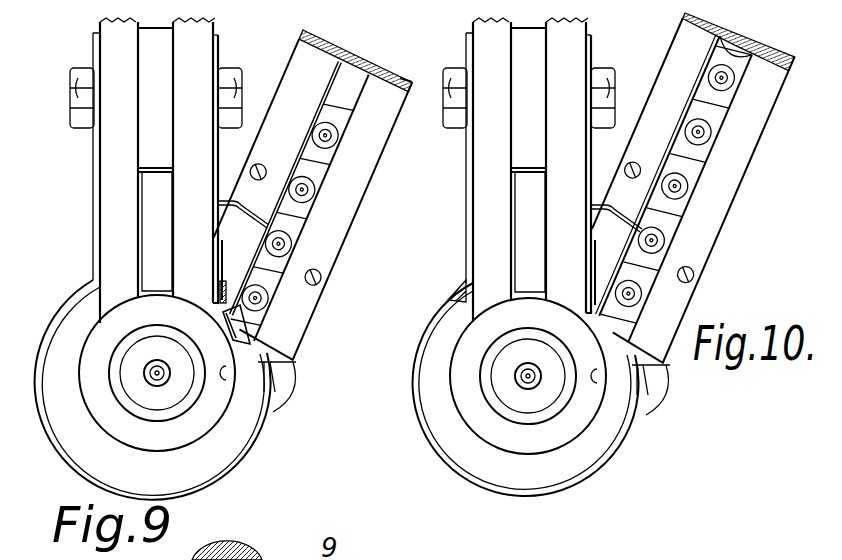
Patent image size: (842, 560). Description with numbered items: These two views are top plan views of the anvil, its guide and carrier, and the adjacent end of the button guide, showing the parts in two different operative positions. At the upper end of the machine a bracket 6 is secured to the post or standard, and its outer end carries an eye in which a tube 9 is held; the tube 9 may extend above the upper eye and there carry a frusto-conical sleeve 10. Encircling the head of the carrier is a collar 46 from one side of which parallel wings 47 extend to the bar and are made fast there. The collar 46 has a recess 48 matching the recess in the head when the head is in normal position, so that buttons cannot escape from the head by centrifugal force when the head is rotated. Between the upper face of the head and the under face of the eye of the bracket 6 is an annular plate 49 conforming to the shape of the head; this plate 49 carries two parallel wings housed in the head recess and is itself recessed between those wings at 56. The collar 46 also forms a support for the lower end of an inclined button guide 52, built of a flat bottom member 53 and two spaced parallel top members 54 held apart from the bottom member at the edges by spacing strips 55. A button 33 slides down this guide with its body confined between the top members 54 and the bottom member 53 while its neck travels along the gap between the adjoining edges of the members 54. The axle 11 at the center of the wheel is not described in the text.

In FIG. 9, the bracket 6 is at (118, 232).
In FIG. 10, the bracket 6 is at (542, 170).
In FIG. 9, the tube 9 is at (122, 360).
In FIG. 10, the tube 9 is at (490, 382).
In FIG. 9, the frusto-conical sleeve 10 is at (187, 427).
In FIG. 10, the frusto-conical sleeve 10 is at (580, 413).
In FIG. 9, the axle 11 is at (152, 352).
In FIG. 10, the axle 11 is at (528, 376).
In FIG. 9, the button 33 is at (305, 208).
In FIG. 10, the button 33 is at (673, 177).
In FIG. 9, the collar 46 is at (100, 473).
In FIG. 10, the collar 46 is at (550, 492).
In FIG. 9, the wings 47 is at (97, 149).
In FIG. 10, the wings 47 is at (470, 230).
In FIG. 9, the recess 48 is at (282, 397).
In FIG. 10, the recess 48 is at (660, 390).
In FIG. 9, the plate 49 is at (80, 413).
In FIG. 10, the plate 49 is at (463, 433).
In FIG. 9, the button guide 52 is at (368, 191).
In FIG. 10, the button guide 52 is at (694, 195).
In FIG. 9, the flat member 53 is at (343, 48).
In FIG. 10, the flat member 53 is at (750, 48).
In FIG. 9, the top members 54 is at (297, 50).
In FIG. 10, the top members 54 is at (688, 26).
In FIG. 9, the spacing strips 55 is at (405, 74).
In FIG. 10, the spacing strips 55 is at (768, 57).
In FIG. 9, the recess 56 is at (267, 348).
In FIG. 10, the recess 56 is at (442, 336).